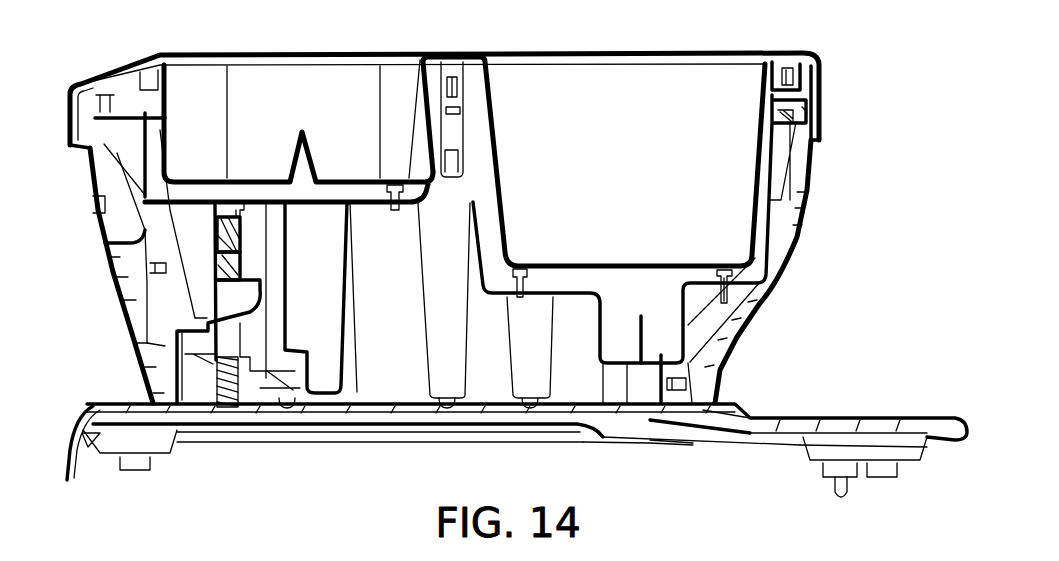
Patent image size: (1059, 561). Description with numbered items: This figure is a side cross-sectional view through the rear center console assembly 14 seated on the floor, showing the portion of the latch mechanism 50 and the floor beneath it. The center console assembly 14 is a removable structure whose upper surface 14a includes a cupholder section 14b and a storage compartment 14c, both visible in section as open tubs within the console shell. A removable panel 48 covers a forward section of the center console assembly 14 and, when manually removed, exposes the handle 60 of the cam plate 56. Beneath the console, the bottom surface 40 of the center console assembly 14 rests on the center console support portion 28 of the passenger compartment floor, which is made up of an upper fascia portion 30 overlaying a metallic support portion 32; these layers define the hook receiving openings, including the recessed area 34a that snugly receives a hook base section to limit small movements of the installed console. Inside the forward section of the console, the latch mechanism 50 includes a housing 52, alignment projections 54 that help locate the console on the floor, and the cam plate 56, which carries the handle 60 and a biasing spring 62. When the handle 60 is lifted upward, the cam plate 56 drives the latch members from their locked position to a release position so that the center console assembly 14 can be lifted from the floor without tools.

The center console assembly 14 is at (824, 82).
The upper surface 14a is at (500, 52).
The cupholder section 14b is at (333, 97).
The storage compartment 14c is at (694, 100).
The center console support portion 28 is at (870, 410).
The upper fascia portion 30 is at (823, 418).
The metallic support portion 32 is at (728, 430).
The recessed area 34a is at (583, 437).
The bottom surface 40 is at (410, 413).
The removable panel 48 is at (127, 320).
The latch mechanism 50 is at (250, 228).
The housing 52 is at (240, 264).
The alignment projections 54 is at (207, 417).
The cam plate 56 is at (218, 338).
The handle 60 is at (230, 297).
The biasing spring 62 is at (230, 423).